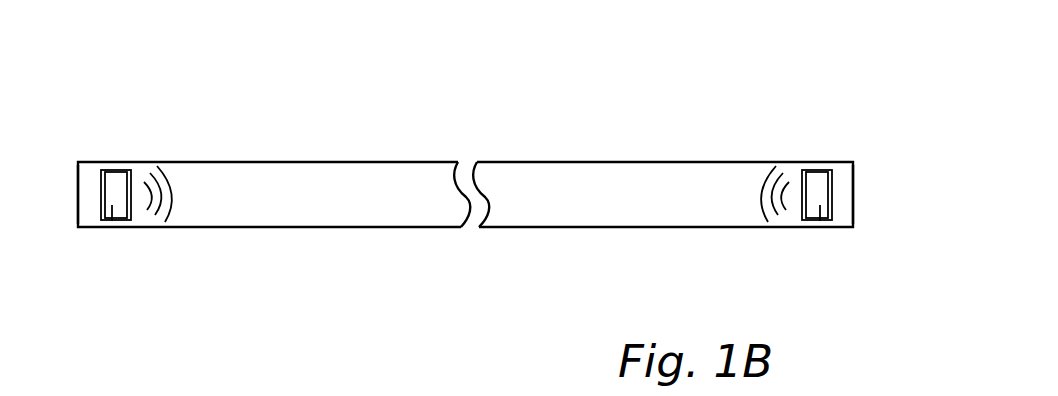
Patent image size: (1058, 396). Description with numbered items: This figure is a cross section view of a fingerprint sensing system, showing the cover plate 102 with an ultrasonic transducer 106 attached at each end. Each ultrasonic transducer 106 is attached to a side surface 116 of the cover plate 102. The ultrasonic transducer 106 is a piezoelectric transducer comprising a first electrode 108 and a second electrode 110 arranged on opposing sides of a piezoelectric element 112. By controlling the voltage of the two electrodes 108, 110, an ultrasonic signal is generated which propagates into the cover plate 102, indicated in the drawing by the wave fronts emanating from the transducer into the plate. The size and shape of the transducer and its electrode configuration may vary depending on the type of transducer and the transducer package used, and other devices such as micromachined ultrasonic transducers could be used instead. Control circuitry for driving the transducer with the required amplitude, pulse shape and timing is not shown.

The cover plate 102 is at (252, 186).
The ultrasonic transducer 106 is at (112, 221).
The first electrode 108 is at (130, 170).
The second electrode 110 is at (104, 172).
The piezoelectric element 112 is at (77, 197).
The side surface 116 is at (112, 222).